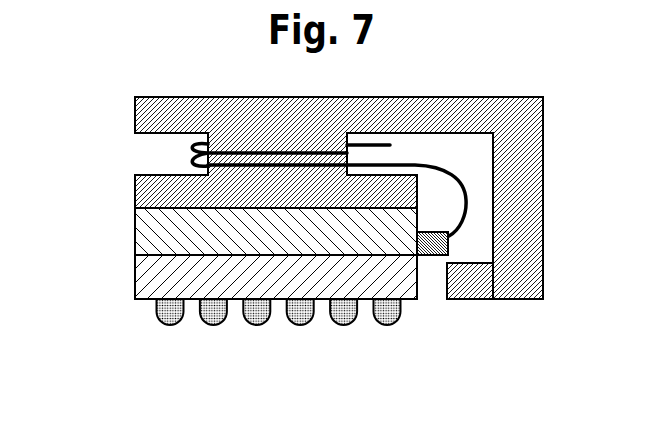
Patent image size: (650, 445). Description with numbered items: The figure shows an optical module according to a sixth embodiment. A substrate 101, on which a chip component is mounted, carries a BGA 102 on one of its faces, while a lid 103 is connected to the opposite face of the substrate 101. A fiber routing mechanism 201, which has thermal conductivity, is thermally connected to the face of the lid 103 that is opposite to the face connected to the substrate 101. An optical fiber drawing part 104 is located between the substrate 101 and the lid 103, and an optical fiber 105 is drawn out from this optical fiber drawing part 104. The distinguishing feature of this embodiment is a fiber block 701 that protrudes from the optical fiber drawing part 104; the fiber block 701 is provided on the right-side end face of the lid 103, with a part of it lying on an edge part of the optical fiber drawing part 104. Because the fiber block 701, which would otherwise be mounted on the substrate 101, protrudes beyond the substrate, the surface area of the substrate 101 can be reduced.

The fiber routing mechanism 201 is at (134, 110).
The substrate 101 is at (134, 282).
The BGA 102 is at (167, 324).
The lid 103 is at (134, 229).
The optical fiber drawing part 104 is at (418, 258).
The optical fiber 105 is at (468, 187).
The fiber block 701 is at (450, 243).